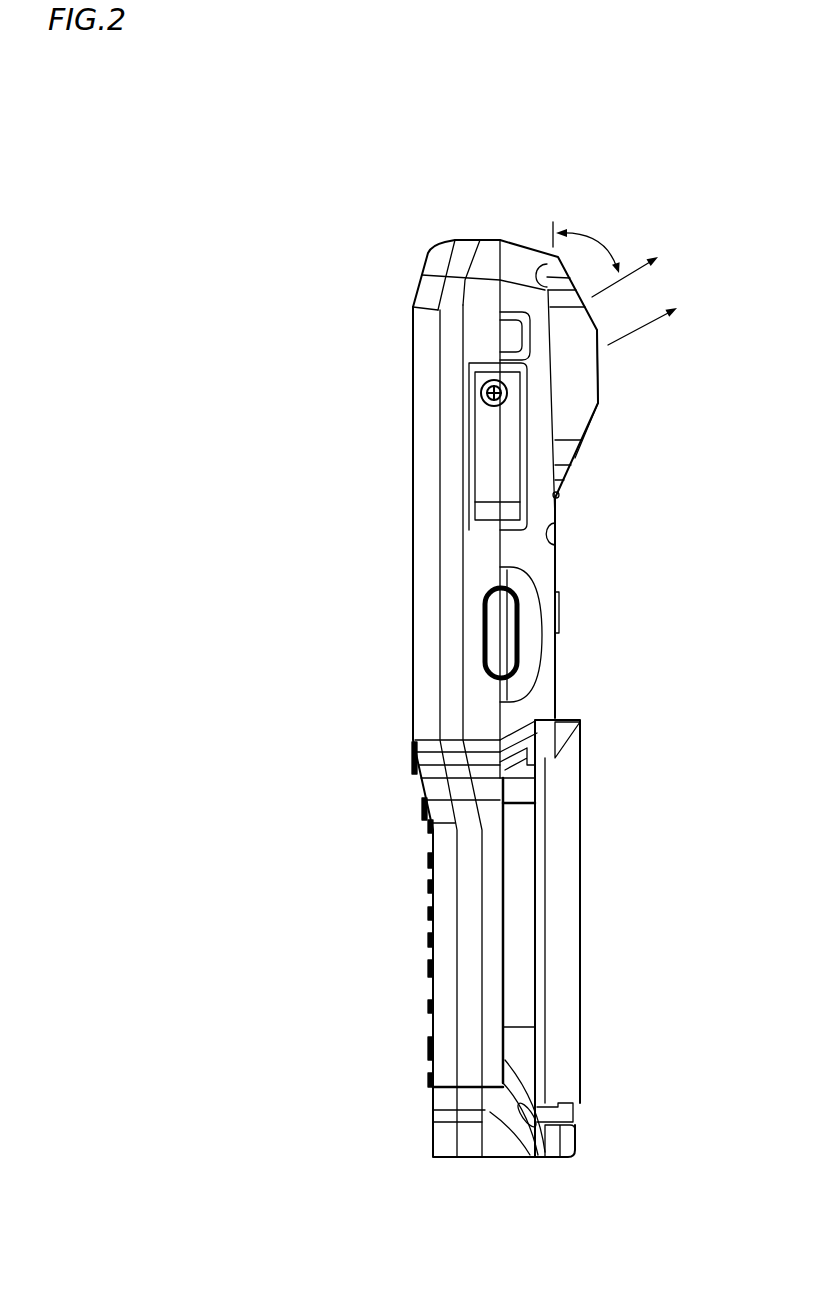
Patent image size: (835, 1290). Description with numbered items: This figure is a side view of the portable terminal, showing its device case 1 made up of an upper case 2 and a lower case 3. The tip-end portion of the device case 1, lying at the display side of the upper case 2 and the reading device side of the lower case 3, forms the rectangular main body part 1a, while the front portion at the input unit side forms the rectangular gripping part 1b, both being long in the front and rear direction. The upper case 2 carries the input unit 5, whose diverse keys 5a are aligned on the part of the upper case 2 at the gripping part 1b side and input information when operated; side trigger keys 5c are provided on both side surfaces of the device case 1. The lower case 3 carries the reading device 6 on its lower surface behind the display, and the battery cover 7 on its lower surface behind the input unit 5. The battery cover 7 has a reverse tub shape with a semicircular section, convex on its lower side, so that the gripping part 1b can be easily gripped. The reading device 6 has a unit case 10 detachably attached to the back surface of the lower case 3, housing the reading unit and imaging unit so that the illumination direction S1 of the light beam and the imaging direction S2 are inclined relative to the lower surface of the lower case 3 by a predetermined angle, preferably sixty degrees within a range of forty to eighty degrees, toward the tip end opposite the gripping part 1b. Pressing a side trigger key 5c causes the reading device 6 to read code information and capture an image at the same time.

The device case 1 is at (426, 250).
The main body part 1a is at (477, 342).
The gripping part 1b is at (523, 878).
The upper case 2 is at (425, 560).
The lower case 3 is at (530, 555).
The input unit 5 is at (420, 975).
The keys 5a is at (428, 930).
The side trigger keys 5c is at (500, 632).
The reading device 6 is at (603, 373).
The battery cover 7 is at (565, 968).
The unit case 10 is at (575, 397).
The illumination direction S1 is at (637, 333).
The imaging direction S2 is at (630, 277).